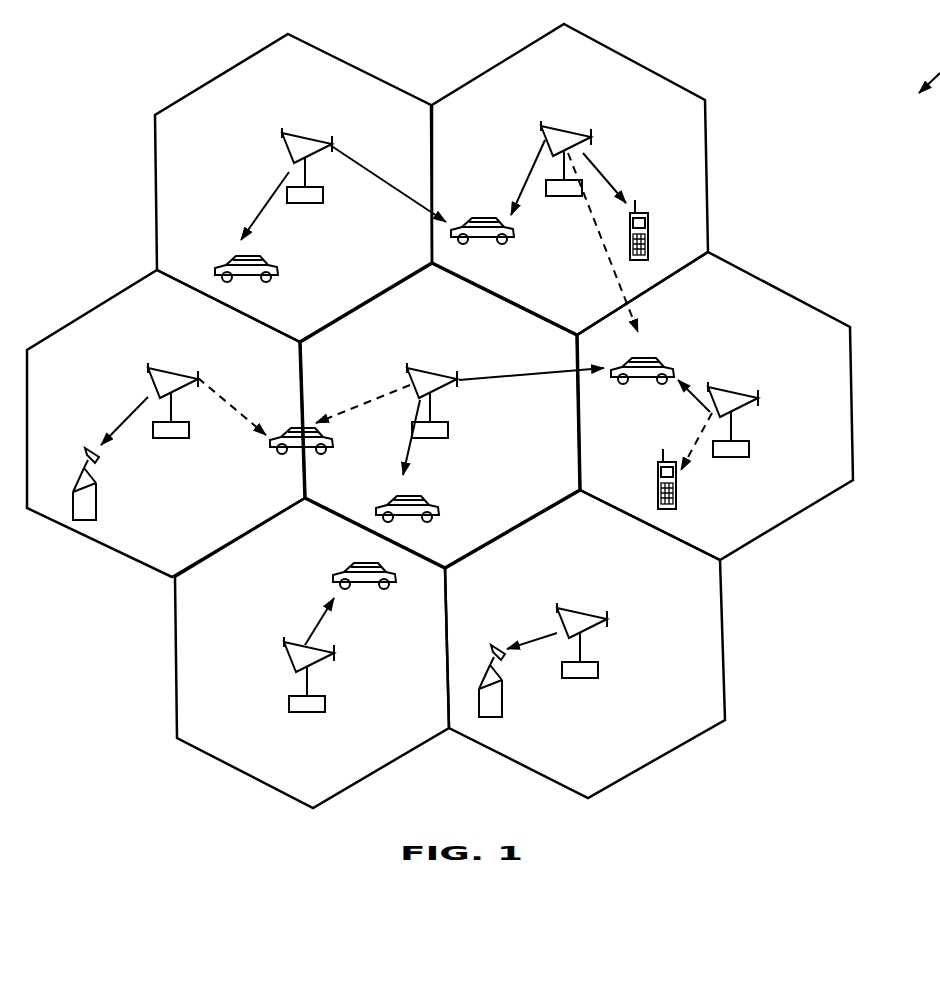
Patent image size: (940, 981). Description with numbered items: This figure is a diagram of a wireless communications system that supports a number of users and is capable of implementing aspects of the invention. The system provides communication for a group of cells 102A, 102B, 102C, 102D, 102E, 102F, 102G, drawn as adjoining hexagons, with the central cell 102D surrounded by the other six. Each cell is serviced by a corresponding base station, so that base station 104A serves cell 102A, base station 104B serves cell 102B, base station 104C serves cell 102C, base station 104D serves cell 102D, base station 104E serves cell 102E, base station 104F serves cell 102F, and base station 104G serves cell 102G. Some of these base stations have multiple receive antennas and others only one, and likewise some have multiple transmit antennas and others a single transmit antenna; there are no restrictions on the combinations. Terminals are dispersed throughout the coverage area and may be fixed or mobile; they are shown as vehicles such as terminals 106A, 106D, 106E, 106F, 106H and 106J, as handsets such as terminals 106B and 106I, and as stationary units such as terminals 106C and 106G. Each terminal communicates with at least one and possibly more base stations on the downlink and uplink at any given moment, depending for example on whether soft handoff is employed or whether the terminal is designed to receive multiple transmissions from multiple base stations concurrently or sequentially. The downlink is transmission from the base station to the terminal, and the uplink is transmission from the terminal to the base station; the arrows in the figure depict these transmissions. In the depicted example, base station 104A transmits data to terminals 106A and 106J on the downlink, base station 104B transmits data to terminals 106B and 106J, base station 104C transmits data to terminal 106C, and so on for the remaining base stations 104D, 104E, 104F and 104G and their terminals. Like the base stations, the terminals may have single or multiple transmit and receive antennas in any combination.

The cell 102A is at (236, 66).
The cell 102B is at (626, 58).
The cell 102C is at (88, 312).
The cell 102D is at (472, 305).
The cell 102E is at (852, 402).
The cell 102F is at (176, 667).
The cell 102G is at (723, 618).
The base station 104A is at (289, 132).
The base station 104B is at (551, 128).
The base station 104C is at (157, 370).
The base station 104D is at (416, 370).
The base station 104E is at (716, 389).
The base station 104F is at (284, 645).
The base station 104G is at (569, 612).
The terminal 106A is at (241, 256).
The terminal 106B is at (641, 213).
The terminal 106C is at (86, 450).
The terminal 106D is at (404, 496).
The terminal 106E is at (650, 358).
The terminal 106F is at (362, 563).
The terminal 106G is at (494, 649).
The terminal 106H is at (293, 428).
The terminal 106I is at (661, 462).
The terminal 106J is at (486, 218).